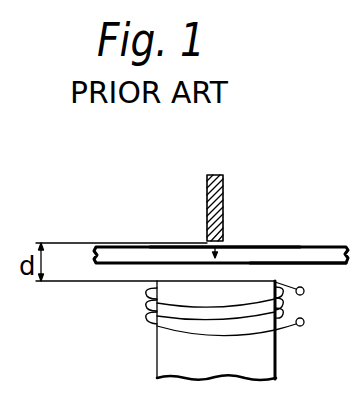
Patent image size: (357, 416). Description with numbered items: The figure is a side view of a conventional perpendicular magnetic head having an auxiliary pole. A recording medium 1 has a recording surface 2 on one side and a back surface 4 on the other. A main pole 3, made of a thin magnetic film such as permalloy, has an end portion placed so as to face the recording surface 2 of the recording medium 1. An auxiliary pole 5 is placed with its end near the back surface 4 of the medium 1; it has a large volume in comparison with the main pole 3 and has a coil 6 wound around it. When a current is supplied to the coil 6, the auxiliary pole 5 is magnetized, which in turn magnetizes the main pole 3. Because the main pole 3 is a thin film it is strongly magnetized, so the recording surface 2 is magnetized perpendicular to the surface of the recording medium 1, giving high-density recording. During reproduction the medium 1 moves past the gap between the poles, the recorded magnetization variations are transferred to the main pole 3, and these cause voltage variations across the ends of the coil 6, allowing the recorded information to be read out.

The recording medium 1 is at (324, 251).
The recording surface 2 is at (271, 246).
The main pole 3 is at (223, 190).
The back surface 4 is at (324, 265).
The auxiliary pole 5 is at (275, 367).
The coil 6 is at (290, 329).